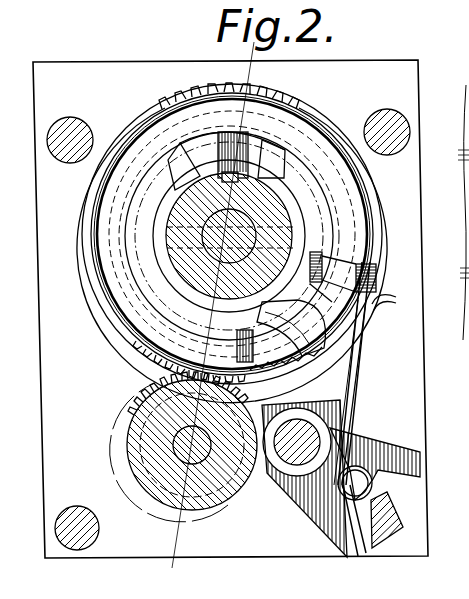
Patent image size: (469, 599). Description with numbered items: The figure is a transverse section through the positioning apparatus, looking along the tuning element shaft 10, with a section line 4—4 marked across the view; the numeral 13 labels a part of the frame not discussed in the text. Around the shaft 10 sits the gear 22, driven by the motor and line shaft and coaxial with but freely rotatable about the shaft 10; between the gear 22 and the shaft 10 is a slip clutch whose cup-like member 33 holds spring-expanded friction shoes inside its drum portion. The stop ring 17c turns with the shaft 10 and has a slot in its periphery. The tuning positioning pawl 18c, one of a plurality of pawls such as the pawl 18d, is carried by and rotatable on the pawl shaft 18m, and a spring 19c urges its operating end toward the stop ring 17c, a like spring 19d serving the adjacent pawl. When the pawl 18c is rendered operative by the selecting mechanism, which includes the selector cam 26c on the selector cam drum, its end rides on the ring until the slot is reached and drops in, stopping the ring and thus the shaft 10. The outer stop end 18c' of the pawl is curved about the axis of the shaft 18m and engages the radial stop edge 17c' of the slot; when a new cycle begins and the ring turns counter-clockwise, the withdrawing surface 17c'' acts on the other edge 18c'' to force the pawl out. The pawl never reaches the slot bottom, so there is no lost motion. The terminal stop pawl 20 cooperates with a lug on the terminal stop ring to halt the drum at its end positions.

The section line 4- 4 is at (257, 49).
The tuning element shaft 10 is at (250, 296).
The mounting holes 13 is at (55, 130).
The stop ring 17c is at (270, 273).
The stop edge 17c' is at (362, 244).
The withdrawing surface 17c'' is at (291, 322).
The tuning positioning pawl 18c is at (373, 409).
The stop end 18c' is at (363, 243).
The withdrawing edge 18c'' is at (388, 261).
The tuning positioning pawl 18d is at (380, 293).
The pawl shaft 18m is at (297, 460).
The spring 19c is at (355, 376).
The spring 19d is at (350, 396).
The terminal stop pawl 20 is at (388, 450).
The gear 22 is at (180, 88).
The selector cam 26c is at (137, 400).
The cup-like member 33 is at (310, 134).